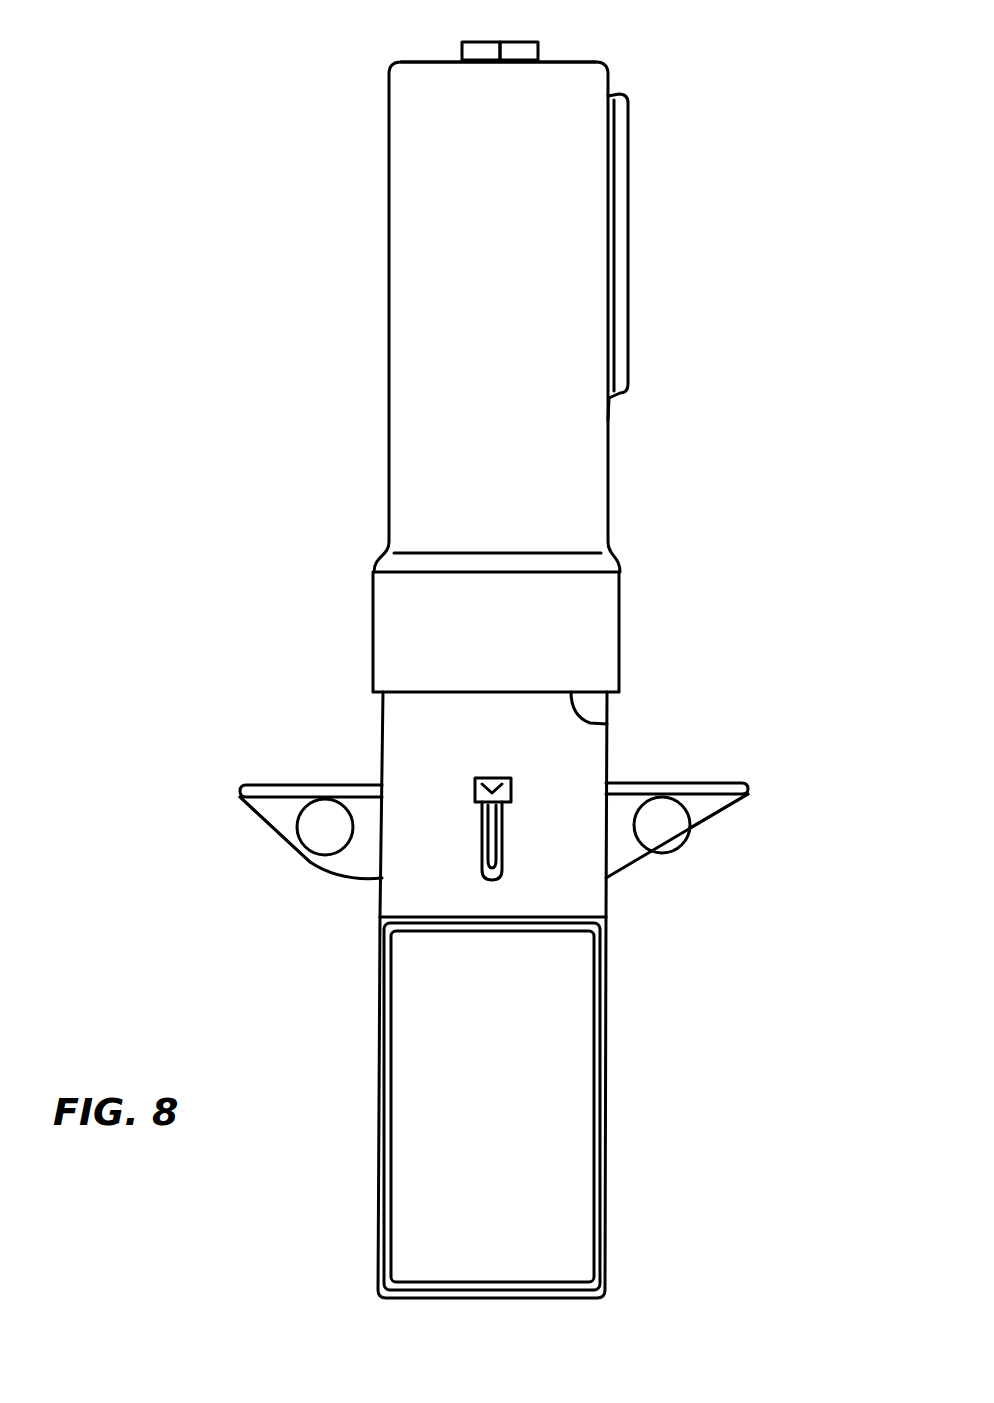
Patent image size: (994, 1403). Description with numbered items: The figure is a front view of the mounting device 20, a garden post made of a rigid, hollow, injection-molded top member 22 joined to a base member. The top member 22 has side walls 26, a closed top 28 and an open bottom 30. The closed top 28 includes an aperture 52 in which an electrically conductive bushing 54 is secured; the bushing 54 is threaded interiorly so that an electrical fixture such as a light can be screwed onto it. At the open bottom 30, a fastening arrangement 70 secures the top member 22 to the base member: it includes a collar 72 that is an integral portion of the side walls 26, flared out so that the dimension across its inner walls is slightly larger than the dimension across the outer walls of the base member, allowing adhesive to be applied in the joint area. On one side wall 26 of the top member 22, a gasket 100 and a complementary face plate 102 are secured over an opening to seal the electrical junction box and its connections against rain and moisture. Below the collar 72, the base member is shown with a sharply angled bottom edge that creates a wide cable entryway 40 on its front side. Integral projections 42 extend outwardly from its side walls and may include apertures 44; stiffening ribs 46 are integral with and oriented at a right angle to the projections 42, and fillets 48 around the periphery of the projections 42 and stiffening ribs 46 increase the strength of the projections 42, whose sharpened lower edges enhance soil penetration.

The mounting device 20 is at (255, 377).
The top member 22 is at (388, 214).
The side walls 26 is at (508, 263).
The closed top 28 is at (580, 60).
The open bottom 30 is at (607, 724).
The cable entryway 40 is at (550, 1100).
The integral projections 42 is at (272, 812).
The apertures 44 is at (327, 840).
The stiffening ribs 46 is at (300, 788).
The fillets 48 is at (511, 800).
The aperture 52 is at (458, 58).
The electrically conductive bushing 54 is at (518, 44).
The fastening arrangement 70 is at (622, 598).
The collar 72 is at (508, 647).
The gasket 100 is at (608, 400).
The face plate 102 is at (622, 197).